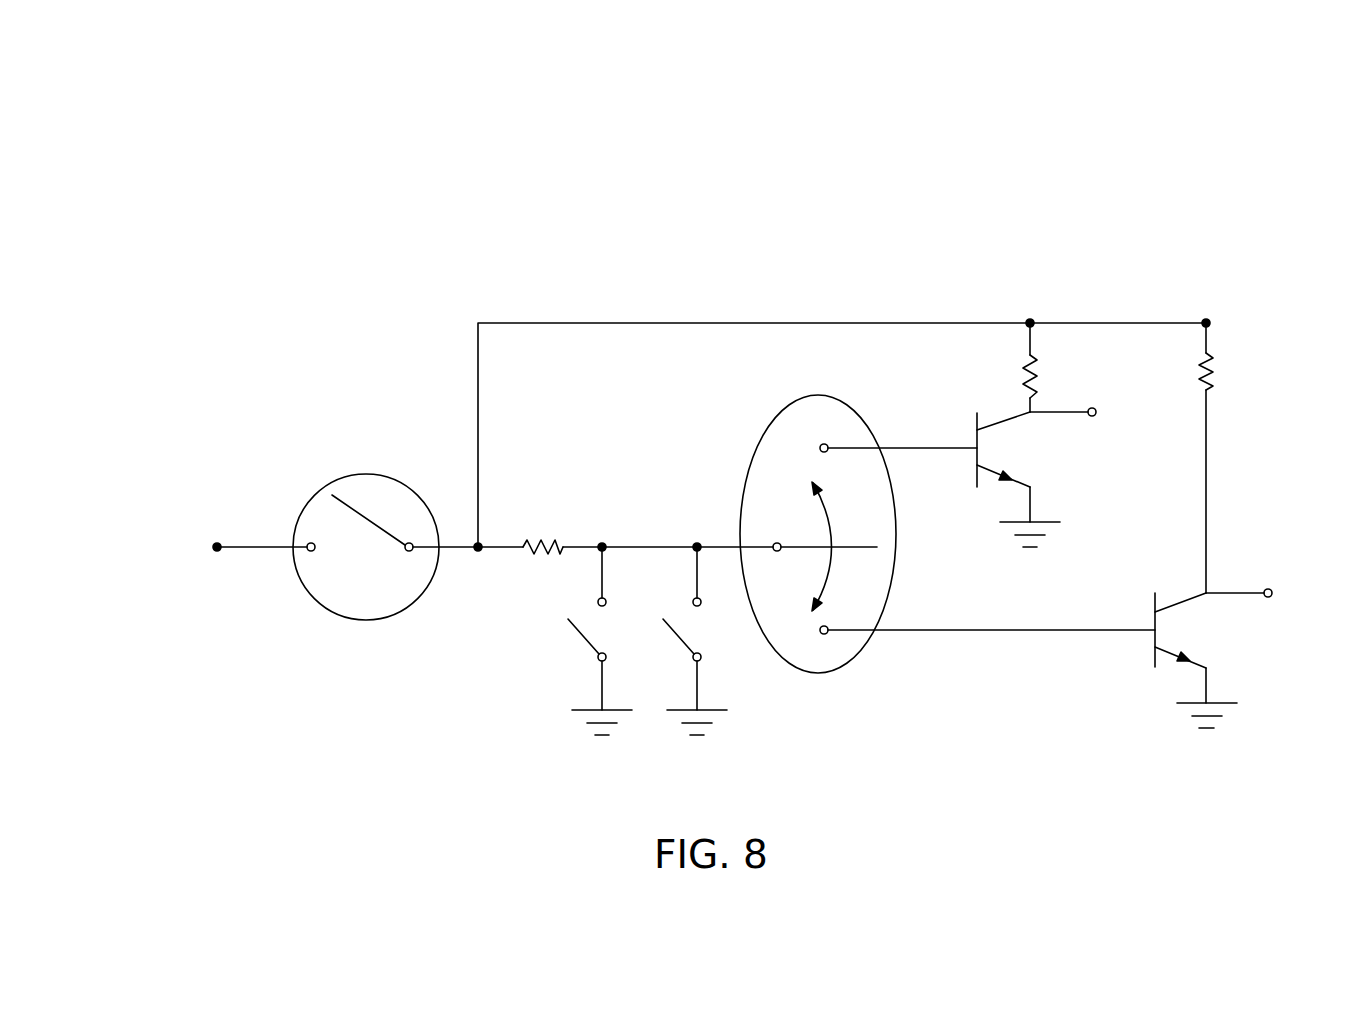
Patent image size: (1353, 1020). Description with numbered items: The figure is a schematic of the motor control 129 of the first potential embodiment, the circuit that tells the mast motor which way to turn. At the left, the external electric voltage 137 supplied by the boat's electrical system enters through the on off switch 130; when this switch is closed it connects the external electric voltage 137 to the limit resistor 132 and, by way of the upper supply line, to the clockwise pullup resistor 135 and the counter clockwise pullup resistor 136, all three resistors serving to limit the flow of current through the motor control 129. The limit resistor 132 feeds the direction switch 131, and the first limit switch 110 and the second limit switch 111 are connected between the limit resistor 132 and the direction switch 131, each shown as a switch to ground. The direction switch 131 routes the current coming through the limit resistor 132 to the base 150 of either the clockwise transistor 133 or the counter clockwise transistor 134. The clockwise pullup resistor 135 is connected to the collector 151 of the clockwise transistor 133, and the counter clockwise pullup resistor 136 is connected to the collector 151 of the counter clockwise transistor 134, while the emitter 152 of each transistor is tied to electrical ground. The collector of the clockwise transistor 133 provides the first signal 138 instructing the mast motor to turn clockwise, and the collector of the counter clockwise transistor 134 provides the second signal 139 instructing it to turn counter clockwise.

The motor control 129 is at (389, 187).
The external electric voltage 137 is at (182, 568).
The on off switch 130 is at (311, 552).
The limit resistor 132 is at (540, 543).
The first limit switch 110 is at (586, 659).
The second limit switch 111 is at (705, 680).
The direction switch 131 is at (832, 672).
The base 150 is at (953, 450).
The collector 151 is at (1035, 405).
The emitter 152 is at (1032, 495).
The clockwise transistor 133 is at (977, 490).
The counter clockwise transistor 134 is at (1153, 668).
The clockwise pullup resistor 135 is at (1025, 362).
The counter clockwise pullup resistor 136 is at (1208, 357).
The first signal 138 is at (1096, 420).
The second signal 139 is at (1270, 600).